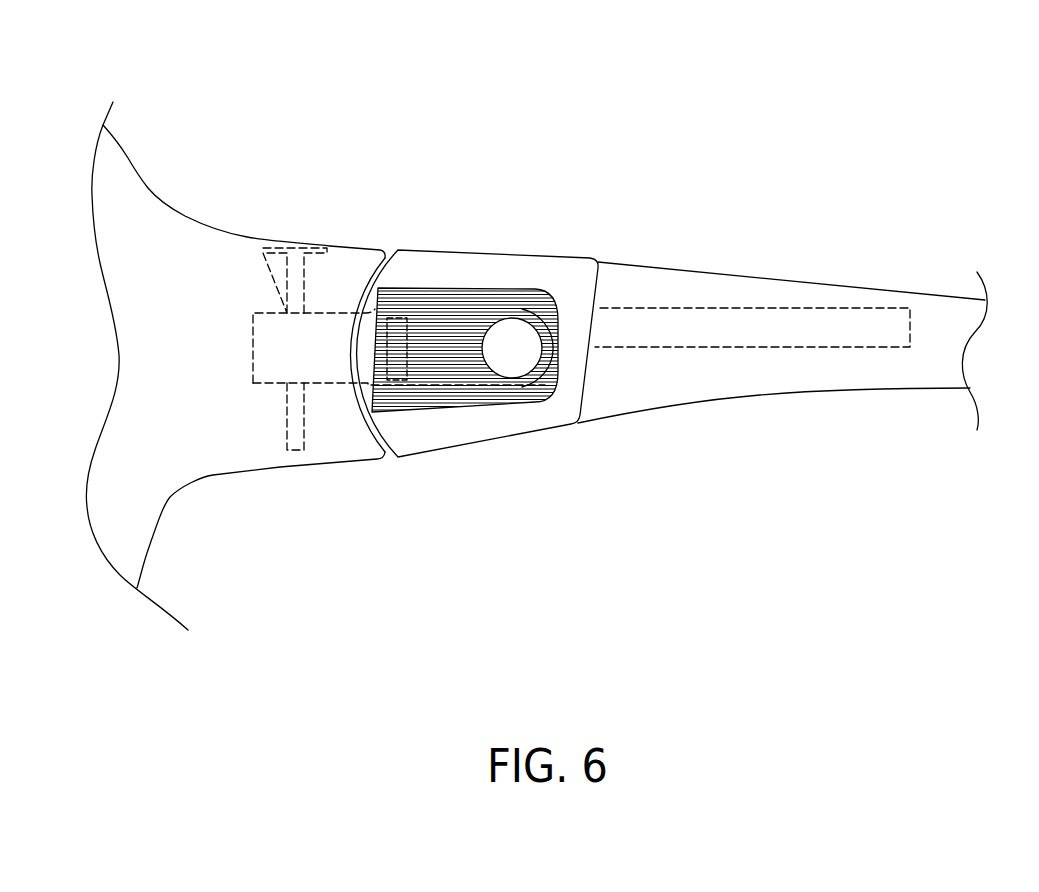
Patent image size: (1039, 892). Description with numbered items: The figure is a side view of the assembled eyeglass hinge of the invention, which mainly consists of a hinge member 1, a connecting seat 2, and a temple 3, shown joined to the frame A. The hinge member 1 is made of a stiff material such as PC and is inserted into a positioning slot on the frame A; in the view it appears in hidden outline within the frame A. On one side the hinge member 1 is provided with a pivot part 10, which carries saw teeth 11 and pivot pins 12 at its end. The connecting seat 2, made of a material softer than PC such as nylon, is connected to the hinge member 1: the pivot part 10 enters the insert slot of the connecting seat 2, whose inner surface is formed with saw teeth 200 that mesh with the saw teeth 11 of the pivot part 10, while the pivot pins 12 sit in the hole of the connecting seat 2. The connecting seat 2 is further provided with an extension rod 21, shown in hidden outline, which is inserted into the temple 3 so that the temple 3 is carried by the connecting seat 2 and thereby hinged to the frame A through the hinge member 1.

The frame A is at (177, 208).
The hinge member 1 is at (339, 407).
The connecting seat 2 is at (592, 240).
The temple 3 is at (716, 247).
The extension rod 21 is at (815, 318).
The saw teeth 200 is at (445, 302).
The pivot pins 12 is at (518, 337).
The pivot part 10 is at (277, 357).
The saw teeth 11 is at (407, 357).